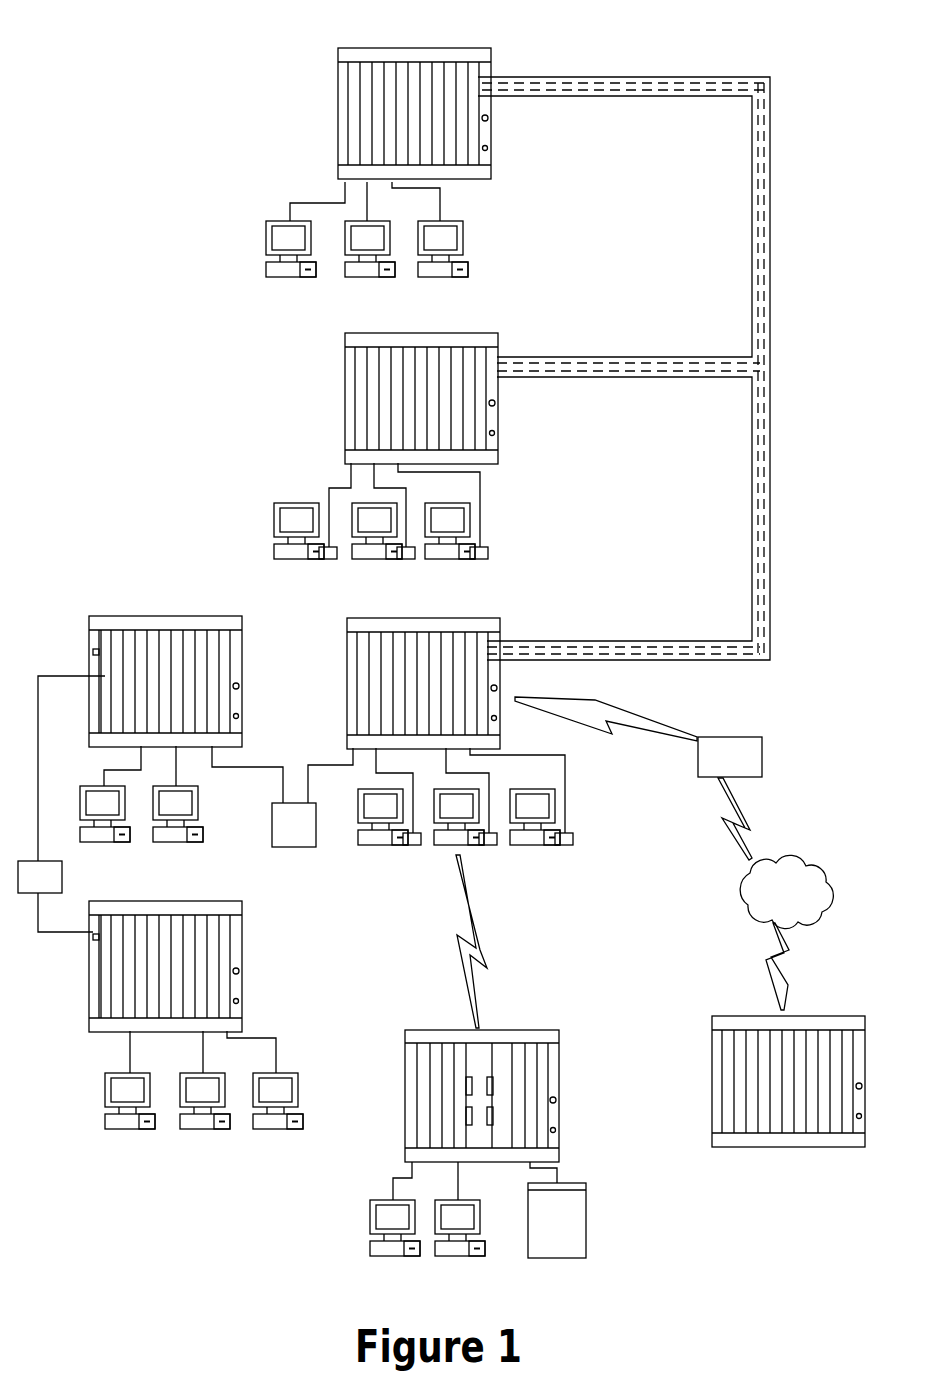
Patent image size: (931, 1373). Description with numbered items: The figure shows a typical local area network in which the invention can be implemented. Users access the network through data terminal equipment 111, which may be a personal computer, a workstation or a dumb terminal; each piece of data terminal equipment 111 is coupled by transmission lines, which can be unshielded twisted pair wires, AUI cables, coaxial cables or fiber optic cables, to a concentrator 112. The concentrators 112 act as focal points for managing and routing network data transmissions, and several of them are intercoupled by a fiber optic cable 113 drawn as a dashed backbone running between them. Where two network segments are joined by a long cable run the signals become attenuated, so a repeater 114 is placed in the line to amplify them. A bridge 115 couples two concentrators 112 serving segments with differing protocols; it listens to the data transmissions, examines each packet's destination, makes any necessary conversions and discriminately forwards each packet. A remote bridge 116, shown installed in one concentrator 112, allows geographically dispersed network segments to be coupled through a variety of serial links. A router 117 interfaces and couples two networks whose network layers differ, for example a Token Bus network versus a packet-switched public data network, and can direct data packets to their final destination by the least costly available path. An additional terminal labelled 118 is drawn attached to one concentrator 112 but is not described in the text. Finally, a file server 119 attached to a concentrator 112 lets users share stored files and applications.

The data terminal equipment 111 is at (297, 278).
The concentrator 112 is at (488, 583).
The fiber optic cable 113 is at (770, 342).
The repeater 114 is at (62, 887).
The bridge 115 is at (272, 818).
The remote bridge 116 is at (498, 1094).
The router 117 is at (762, 750).
The network management station 118 is at (199, 813).
The file server 119 is at (586, 1215).